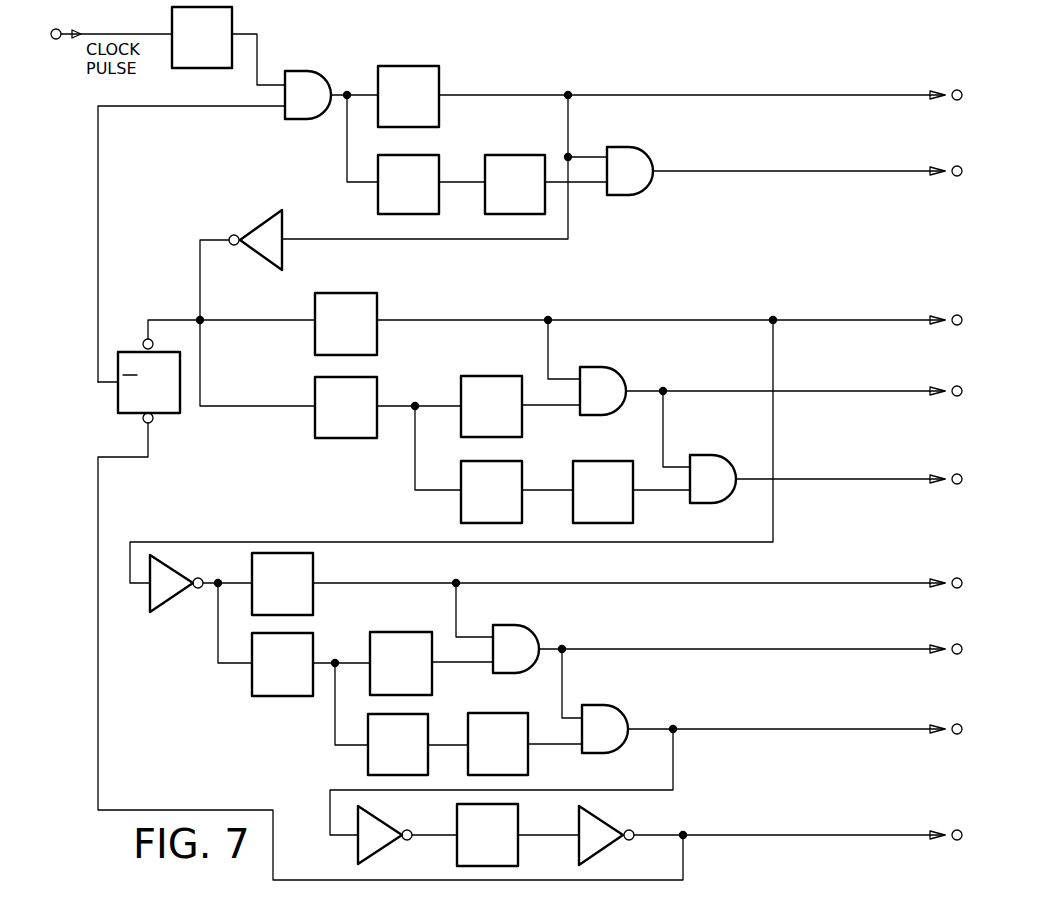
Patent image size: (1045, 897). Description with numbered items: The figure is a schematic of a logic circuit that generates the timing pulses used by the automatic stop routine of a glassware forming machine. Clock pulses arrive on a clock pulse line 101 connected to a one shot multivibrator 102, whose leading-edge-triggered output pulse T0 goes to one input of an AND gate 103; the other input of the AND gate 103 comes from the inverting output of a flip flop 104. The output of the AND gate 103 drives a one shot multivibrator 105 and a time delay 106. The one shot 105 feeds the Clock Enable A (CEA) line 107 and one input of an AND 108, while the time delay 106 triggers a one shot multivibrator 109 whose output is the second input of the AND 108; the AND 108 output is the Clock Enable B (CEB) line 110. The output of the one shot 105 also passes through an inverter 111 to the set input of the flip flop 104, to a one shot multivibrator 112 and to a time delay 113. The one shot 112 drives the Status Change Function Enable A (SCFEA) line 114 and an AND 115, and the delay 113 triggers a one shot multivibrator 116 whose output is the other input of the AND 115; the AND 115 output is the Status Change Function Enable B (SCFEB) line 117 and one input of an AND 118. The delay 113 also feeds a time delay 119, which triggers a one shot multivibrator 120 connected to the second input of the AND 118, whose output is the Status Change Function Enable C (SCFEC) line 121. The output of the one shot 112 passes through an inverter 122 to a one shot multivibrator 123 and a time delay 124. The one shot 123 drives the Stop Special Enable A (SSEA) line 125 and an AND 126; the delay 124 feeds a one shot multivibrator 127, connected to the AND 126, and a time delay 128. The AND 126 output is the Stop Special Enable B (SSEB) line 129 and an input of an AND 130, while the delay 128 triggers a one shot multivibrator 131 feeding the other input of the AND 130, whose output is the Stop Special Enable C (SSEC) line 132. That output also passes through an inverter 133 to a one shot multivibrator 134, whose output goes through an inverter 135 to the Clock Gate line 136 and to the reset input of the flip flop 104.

The clock pulse line 101 is at (139, 33).
The one shot multivibrator 102 is at (222, 22).
The AND gate 103 is at (311, 70).
The flip flop 104 is at (167, 410).
The one shot multivibrator 105 is at (430, 70).
The time delay 106 is at (432, 158).
The Clock Enable A (CEA) line 107 is at (899, 92).
The AND gate 108 is at (632, 160).
The one shot multivibrator 109 is at (522, 160).
The Clock Enable B (CEB) line 110 is at (899, 168).
The inverter 111 is at (263, 228).
The one shot multivibrator 112 is at (373, 308).
The time delay 113 is at (374, 383).
The Status Change Function Enable A (SCFEA) line 114 is at (901, 318).
The AND gate 115 is at (612, 386).
The one shot multivibrator 116 is at (498, 381).
The Status Change Function Enable B (SCFEB) line 117 is at (901, 389).
The AND gate 118 is at (713, 466).
The time delay 119 is at (510, 463).
The one shot multivibrator 120 is at (618, 468).
The Status Change Function Enable C (SCFEC) line 121 is at (901, 477).
The inverter 122 is at (168, 578).
The one shot multivibrator 123 is at (313, 571).
The time delay 124 is at (313, 630).
The Stop Special Enable A (SSEA) line 125 is at (901, 581).
The AND gate 126 is at (523, 634).
The one shot multivibrator 127 is at (421, 643).
The time delay 128 is at (425, 718).
The Stop Special Enable B (SSEB) line 129 is at (901, 647).
The AND gate 130 is at (612, 714).
The one shot multivibrator 131 is at (515, 722).
The Stop Special Enable C (SSEC) line 132 is at (901, 727).
The inverter 133 is at (388, 826).
The one shot multivibrator 134 is at (511, 819).
The inverter 135 is at (608, 826).
The Clock Gate line 136 is at (901, 833).